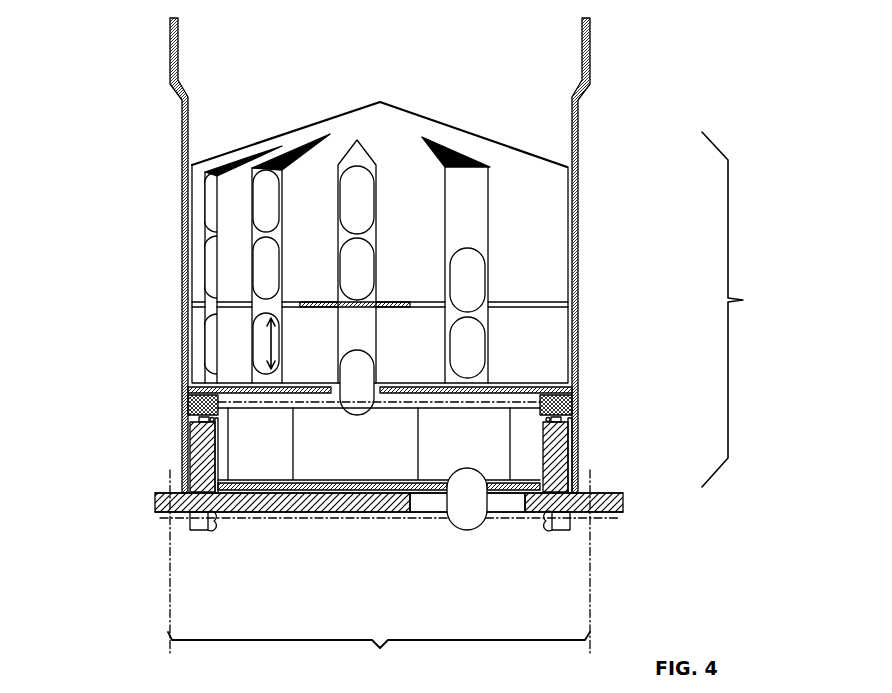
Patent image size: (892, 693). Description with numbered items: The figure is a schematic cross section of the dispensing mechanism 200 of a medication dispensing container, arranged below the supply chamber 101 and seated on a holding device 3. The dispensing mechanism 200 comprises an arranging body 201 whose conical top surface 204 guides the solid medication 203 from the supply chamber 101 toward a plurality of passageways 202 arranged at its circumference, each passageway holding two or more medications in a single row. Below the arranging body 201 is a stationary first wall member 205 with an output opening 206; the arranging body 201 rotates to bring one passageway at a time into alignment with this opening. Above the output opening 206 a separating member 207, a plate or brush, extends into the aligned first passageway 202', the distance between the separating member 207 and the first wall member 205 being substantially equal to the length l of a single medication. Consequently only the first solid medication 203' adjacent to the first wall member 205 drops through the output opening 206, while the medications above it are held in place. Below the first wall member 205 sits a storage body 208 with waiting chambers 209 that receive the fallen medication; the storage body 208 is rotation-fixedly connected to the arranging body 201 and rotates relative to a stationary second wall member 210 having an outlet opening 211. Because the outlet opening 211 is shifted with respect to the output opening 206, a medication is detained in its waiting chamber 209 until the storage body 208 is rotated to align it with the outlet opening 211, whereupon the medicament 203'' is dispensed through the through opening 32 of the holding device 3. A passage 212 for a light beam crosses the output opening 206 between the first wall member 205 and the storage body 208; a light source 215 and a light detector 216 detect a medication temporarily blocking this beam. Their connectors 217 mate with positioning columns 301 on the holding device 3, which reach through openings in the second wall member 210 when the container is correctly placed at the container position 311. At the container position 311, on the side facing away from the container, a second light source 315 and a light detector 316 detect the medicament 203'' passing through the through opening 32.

The supply chamber 101 is at (568, 58).
The dispensing mechanism 200 is at (745, 309).
The arranging body 201 is at (498, 150).
The passageways 202 is at (347, 217).
The first passageway 202' is at (373, 205).
The solid medication 203 is at (326, 272).
The first solid medication 203' is at (373, 410).
The medicament 203'' is at (552, 562).
The conical top surface 204 is at (342, 120).
The first wall member 205 is at (183, 385).
The output opening 206 is at (328, 482).
The separating member 207 is at (398, 308).
The storage body 208 is at (570, 440).
The waiting chambers 209 is at (300, 467).
The second wall member 210 is at (620, 498).
The outlet opening 211 is at (480, 520).
The passage 212 is at (522, 385).
The light source 215 is at (183, 410).
The light detector 216 is at (575, 410).
The connectors 217 is at (188, 420).
The positioning columns 301 is at (195, 458).
The container position 311 is at (379, 573).
The second light source 315 is at (185, 522).
The light detector 316 is at (560, 522).
The through opening 32 is at (500, 510).
The holding device 3 is at (612, 505).
The length l is at (273, 345).